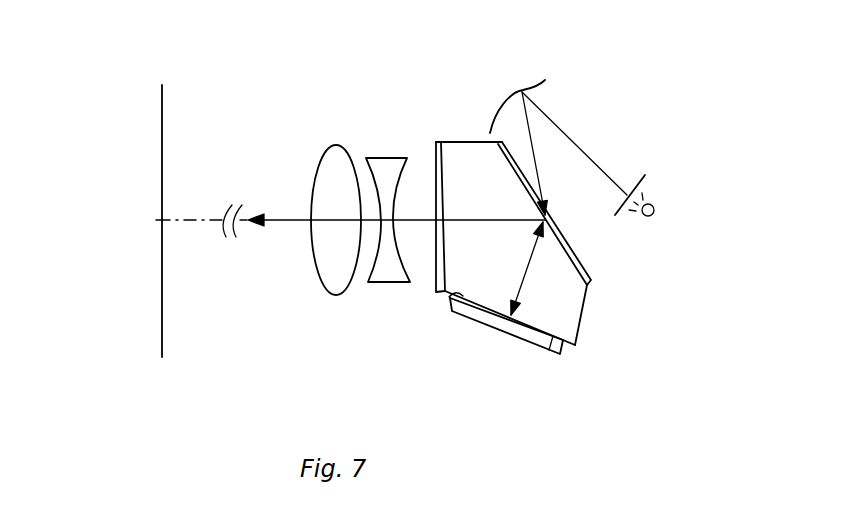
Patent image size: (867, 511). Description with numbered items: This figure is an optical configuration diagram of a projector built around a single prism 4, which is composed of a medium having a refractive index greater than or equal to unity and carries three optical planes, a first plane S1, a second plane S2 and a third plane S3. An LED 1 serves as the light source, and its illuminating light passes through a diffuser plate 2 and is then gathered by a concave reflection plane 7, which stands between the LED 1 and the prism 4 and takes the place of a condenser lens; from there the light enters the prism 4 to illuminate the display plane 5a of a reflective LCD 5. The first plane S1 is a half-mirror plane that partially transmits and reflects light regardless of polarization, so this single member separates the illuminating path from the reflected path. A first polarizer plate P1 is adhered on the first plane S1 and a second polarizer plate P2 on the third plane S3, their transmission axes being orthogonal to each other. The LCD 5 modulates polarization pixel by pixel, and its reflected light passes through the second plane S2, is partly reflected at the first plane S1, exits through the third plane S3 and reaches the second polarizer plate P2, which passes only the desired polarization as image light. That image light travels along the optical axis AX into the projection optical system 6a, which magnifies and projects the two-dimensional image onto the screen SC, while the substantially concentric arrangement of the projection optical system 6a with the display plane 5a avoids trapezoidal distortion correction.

The LED 1 is at (655, 212).
The diffuser plate 2 is at (645, 183).
The prism 4 is at (585, 320).
The reflective LCD 5 is at (530, 347).
The display plane 5a is at (452, 300).
The projection optical system 6a is at (413, 322).
The concave reflection plane 7 is at (545, 80).
The first polarizer plate P1 is at (588, 270).
The second polarizer plate P2 is at (434, 162).
The first plane S1 is at (506, 158).
The second plane S2 is at (551, 357).
The third plane S3 is at (440, 170).
The screen SC is at (160, 127).
The optical axis AX is at (289, 226).